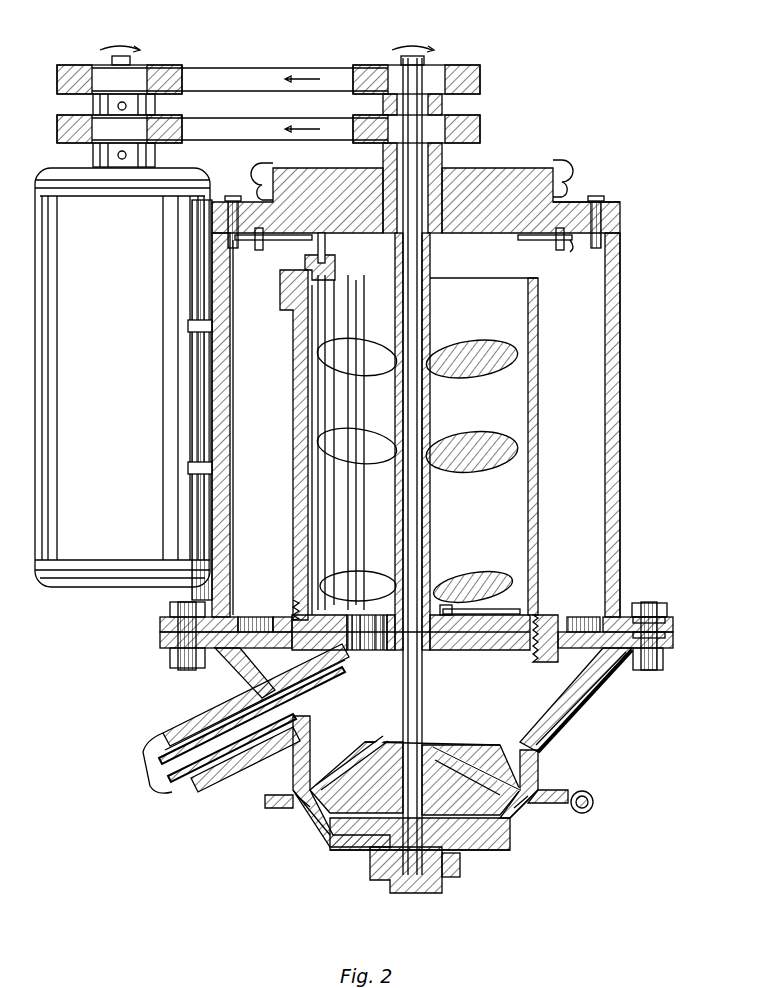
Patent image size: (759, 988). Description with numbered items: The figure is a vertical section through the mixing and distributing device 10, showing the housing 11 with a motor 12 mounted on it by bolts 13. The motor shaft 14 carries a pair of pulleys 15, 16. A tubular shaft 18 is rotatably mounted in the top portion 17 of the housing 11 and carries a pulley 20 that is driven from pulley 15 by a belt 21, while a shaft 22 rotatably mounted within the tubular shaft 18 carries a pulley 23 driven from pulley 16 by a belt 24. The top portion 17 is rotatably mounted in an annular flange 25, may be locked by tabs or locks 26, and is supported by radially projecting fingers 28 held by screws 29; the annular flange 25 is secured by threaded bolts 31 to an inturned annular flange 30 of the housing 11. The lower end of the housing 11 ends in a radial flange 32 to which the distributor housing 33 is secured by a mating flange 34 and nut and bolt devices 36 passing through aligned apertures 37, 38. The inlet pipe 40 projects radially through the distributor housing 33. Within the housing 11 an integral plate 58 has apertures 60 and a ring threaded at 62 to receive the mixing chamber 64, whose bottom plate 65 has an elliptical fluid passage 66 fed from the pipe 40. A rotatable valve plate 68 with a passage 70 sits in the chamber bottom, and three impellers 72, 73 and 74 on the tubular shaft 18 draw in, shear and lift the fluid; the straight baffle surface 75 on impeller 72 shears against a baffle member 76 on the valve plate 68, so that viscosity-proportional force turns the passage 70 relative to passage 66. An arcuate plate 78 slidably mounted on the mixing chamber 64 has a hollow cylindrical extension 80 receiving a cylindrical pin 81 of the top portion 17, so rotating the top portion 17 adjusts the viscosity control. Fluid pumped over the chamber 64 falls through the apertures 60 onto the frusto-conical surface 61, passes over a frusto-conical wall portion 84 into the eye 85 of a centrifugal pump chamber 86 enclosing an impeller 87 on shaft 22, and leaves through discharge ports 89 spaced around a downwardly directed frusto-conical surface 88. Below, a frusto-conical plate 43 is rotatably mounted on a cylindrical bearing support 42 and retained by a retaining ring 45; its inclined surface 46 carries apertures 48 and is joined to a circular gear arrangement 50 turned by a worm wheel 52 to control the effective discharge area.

The mixing and distributing device 10 is at (652, 370).
The housing 11 is at (620, 430).
The motor 12 is at (36, 380).
The bolts 13 is at (190, 326).
The shaft 14 is at (121, 50).
The pulley 15 is at (62, 118).
The pulley 16 is at (150, 65).
The top portion 17 is at (490, 168).
The tubular shaft 18 is at (432, 304).
The pulley 20 is at (470, 115).
The belt 21 is at (240, 120).
The shaft 22 is at (412, 50).
The pulley 23 is at (435, 65).
The belt 24 is at (232, 65).
The annular flange 25 is at (612, 200).
The tabs or locks 26 is at (264, 162).
The radially projecting fingers 28 is at (262, 240).
The screws 29 is at (259, 252).
The inturned annular flange 30 is at (575, 252).
The threaded bolts 31 is at (234, 196).
The radial flange 32 is at (665, 618).
The distributor housing 33 is at (590, 700).
The mating flange 34 is at (693, 646).
The nut and bolt devices 36 is at (650, 670).
The aperture 37 is at (666, 620).
The aperture 38 is at (666, 636).
The inlet pipe 40 is at (155, 752).
The cylindrical bearing support 42 is at (433, 896).
The frusto-conical plate 43 is at (493, 855).
The retaining ring 45 is at (462, 878).
The inclined surface 46 is at (518, 848).
The apertures 48 is at (310, 822).
The circular gear arrangement 50 is at (268, 802).
The worm wheel 52 is at (587, 791).
The integral plate 58 is at (282, 608).
The apertures 60 is at (260, 616).
The frusto-conical surface 61 is at (570, 690).
The threads 62 is at (545, 614).
The mixing chamber 64 is at (540, 432).
The bottom plate 65 is at (480, 652).
The fluid passage 66 is at (371, 650).
The valve plate 68 is at (450, 608).
The fluid passage 70 is at (370, 632).
The impeller 72 is at (470, 574).
The impeller 73 is at (490, 436).
The impeller 74 is at (485, 342).
The straight baffle surface 75 is at (362, 590).
The baffle member 76 is at (520, 606).
The arcuate plate 78 is at (335, 500).
The hollow cylindrical extension 80 is at (338, 262).
The cylindrical pin 81 is at (326, 243).
The frusto-conical wall portion 84 is at (488, 745).
The eye 85 is at (443, 730).
The centrifugal pump chamber 86 is at (360, 755).
The impeller 87 is at (455, 770).
The frusto-conical surface 88 is at (546, 790).
The discharge ports 89 is at (305, 803).